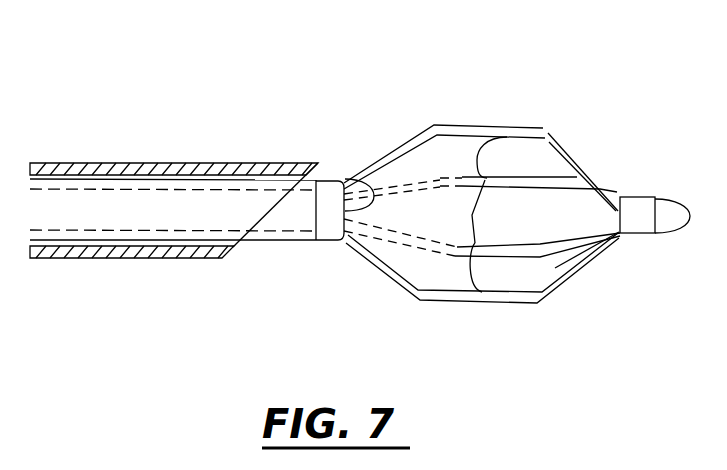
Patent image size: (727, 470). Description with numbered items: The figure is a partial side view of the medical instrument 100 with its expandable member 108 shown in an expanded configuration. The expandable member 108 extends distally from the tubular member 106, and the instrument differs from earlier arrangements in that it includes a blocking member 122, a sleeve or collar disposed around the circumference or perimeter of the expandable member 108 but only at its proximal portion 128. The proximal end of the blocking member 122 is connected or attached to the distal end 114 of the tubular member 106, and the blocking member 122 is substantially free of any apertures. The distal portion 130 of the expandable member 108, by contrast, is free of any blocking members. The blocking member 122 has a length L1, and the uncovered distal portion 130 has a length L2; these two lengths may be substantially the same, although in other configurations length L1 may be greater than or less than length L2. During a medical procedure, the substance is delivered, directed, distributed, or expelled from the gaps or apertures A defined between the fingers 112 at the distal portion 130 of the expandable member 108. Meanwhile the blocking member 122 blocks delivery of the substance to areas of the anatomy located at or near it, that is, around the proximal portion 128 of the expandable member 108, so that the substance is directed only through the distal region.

The medical instrument 100 is at (254, 92).
The tubular member 106 is at (288, 235).
The expandable member 108 is at (597, 125).
The fingers 112 is at (497, 177).
The distal end 114 is at (372, 192).
The blocking member 122 is at (418, 268).
The proximal portion 128 is at (436, 213).
The distal portion 130 is at (542, 215).
The length L1 is at (493, 66).
The length L2 is at (620, 66).
The apertures A is at (560, 177).